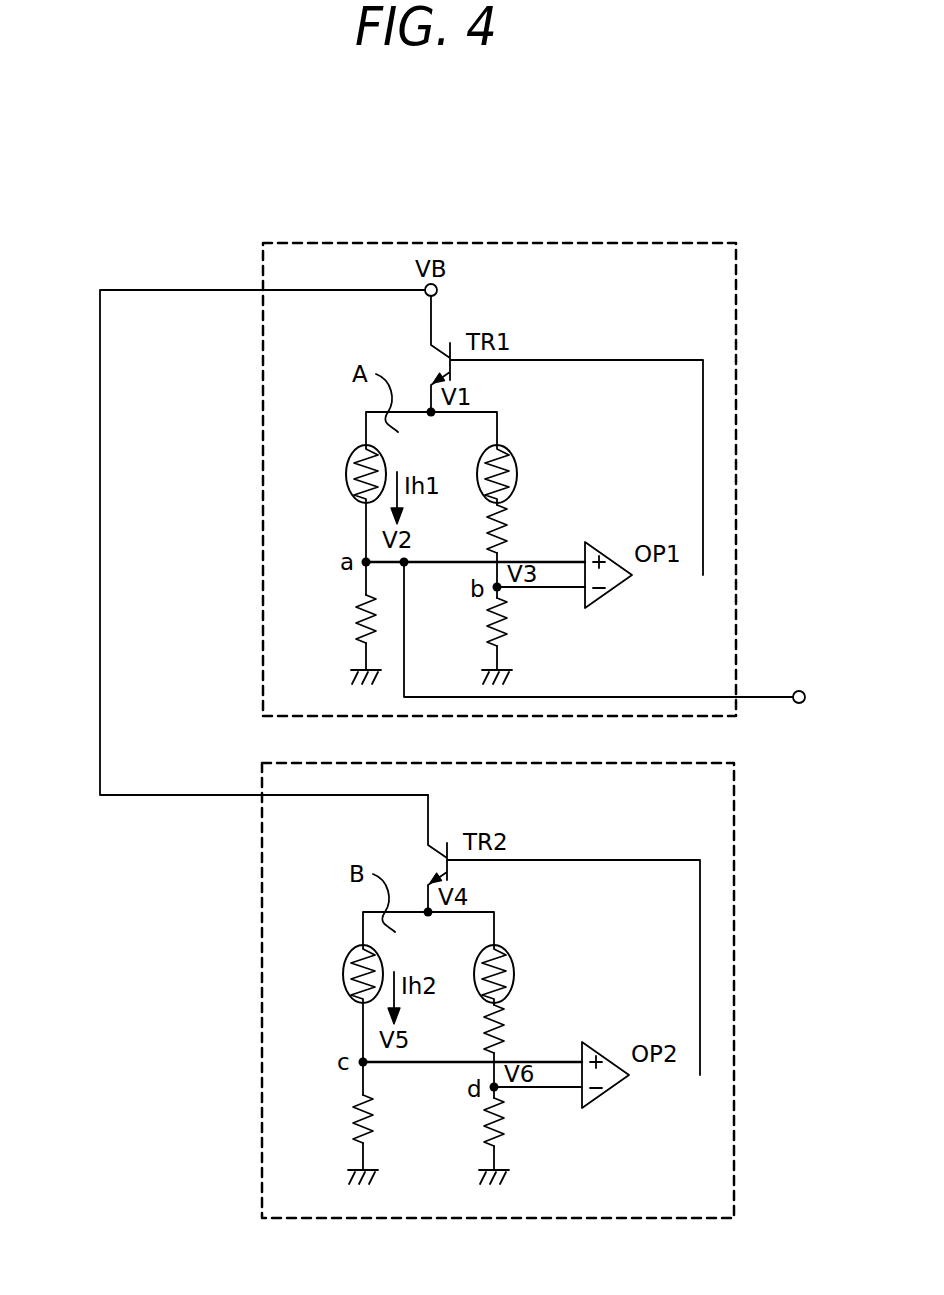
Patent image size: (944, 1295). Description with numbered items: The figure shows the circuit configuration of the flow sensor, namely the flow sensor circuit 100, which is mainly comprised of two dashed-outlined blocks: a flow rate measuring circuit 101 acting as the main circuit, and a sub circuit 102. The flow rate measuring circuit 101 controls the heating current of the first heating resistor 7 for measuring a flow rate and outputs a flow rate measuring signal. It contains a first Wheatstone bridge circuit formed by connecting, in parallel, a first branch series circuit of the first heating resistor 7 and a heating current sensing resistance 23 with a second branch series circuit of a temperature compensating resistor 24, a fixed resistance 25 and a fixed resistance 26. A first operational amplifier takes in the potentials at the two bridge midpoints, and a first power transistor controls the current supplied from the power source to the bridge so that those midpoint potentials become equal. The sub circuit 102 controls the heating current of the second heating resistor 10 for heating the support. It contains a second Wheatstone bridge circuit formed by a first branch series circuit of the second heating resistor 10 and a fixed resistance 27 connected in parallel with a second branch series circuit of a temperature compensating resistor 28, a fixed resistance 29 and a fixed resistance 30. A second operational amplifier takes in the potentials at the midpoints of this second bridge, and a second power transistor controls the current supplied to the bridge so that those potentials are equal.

The flow sensor circuit 100 is at (695, 190).
The flow rate measuring circuit 101 is at (741, 320).
The sub circuit 102 is at (544, 990).
The first heating resistor 7 is at (345, 472).
The second heating resistor 10 is at (331, 975).
The heating current sensing resistance 23 is at (352, 614).
The temperature compensating resistor 24 is at (518, 470).
The fixed resistance 25 is at (504, 535).
The fixed resistance 26 is at (500, 607).
The fixed resistance 27 is at (326, 1125).
The temperature compensating resistor 28 is at (526, 974).
The fixed resistance 29 is at (530, 1029).
The fixed resistance 30 is at (529, 1127).